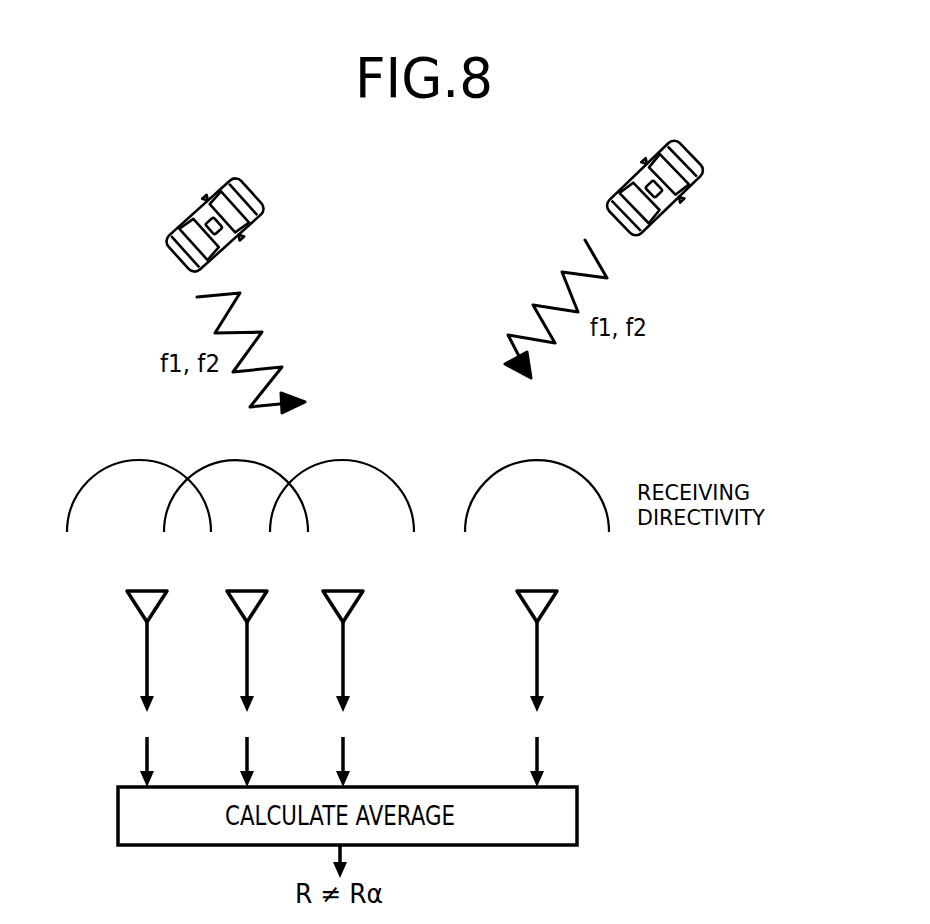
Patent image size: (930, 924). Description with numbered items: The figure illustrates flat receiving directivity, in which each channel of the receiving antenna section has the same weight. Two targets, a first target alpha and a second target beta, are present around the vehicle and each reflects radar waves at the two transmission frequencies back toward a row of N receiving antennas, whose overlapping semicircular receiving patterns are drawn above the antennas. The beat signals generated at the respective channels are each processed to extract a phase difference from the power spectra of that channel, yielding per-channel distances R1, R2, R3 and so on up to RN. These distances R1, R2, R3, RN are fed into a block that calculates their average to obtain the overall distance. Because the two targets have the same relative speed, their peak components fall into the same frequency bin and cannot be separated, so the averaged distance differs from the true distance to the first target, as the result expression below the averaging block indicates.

The distance R1 is at (147, 673).
The distance R2 is at (247, 673).
The distance R3 is at (343, 673).
The distance RN is at (537, 673).